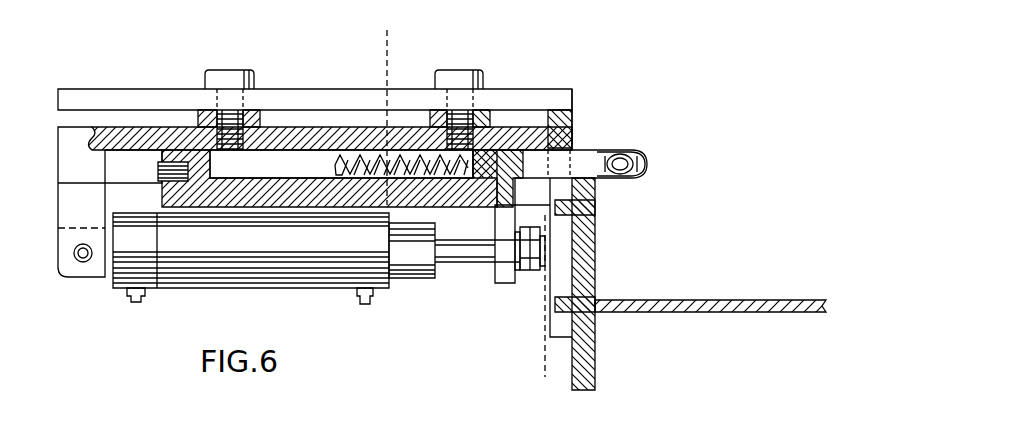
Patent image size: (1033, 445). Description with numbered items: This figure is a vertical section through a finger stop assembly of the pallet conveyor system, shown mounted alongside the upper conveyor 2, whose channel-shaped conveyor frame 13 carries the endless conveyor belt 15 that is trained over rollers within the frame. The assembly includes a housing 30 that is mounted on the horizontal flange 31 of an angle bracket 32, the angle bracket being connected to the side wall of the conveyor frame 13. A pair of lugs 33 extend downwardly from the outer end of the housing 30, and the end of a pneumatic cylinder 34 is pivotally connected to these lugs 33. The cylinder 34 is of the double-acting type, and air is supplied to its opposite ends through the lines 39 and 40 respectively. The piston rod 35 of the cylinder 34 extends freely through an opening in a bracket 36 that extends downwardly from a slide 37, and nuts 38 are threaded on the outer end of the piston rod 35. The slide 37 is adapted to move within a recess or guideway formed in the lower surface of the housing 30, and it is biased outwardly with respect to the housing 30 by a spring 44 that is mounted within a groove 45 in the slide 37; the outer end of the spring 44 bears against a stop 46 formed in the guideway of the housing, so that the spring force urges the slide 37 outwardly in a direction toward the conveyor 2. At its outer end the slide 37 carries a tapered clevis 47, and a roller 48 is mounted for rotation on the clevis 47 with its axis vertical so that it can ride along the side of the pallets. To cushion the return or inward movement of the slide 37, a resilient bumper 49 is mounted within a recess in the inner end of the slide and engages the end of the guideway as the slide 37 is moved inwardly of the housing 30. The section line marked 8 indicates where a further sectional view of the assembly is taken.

The upper conveyor 2 is at (781, 292).
The section line 8 is at (387, 30).
The conveyor frame 13 is at (588, 252).
The endless conveyor belt 15 is at (745, 272).
The housing 30 is at (140, 130).
The horizontal flange 31 is at (540, 62).
The angle bracket 32 is at (573, 99).
The lugs 33 is at (95, 217).
The pneumatic cylinder 34 is at (263, 262).
The piston rod 35 is at (482, 250).
The bracket 36 is at (512, 287).
The slide 37 is at (493, 198).
The nuts 38 is at (536, 272).
The air line 39 is at (130, 307).
The air line 40 is at (372, 303).
The spring 44 is at (362, 153).
The groove 45 is at (412, 148).
The stop 46 is at (310, 165).
The tapered clevis 47 is at (603, 148).
The roller 48 is at (648, 163).
The resilient bumper 49 is at (163, 180).